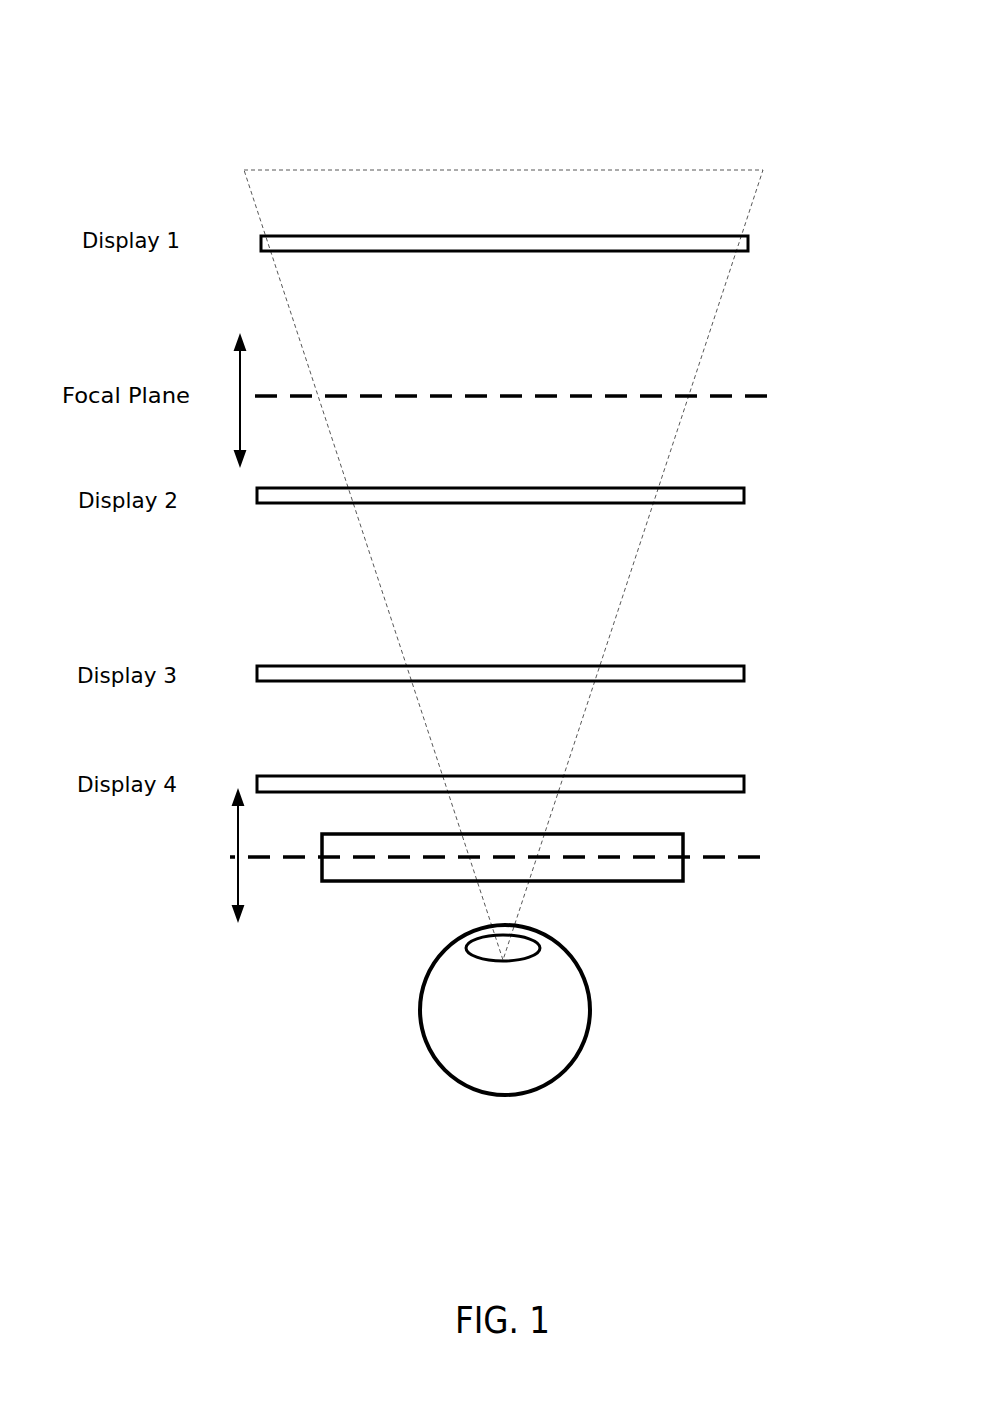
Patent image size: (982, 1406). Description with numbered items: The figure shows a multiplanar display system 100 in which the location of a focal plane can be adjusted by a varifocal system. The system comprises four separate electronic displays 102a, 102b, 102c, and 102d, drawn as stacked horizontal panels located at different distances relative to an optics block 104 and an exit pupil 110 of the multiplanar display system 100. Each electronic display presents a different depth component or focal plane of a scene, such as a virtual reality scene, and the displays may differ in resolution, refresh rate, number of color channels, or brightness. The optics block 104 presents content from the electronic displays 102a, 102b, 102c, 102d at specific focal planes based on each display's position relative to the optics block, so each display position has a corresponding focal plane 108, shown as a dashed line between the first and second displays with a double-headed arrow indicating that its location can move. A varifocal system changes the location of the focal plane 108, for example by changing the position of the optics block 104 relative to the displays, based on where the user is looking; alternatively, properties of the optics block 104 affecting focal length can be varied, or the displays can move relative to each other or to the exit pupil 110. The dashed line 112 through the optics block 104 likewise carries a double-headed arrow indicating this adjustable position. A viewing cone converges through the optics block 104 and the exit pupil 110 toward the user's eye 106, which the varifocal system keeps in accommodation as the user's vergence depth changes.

The multiplanar display system 100 is at (81, 62).
The electronic display 102a is at (748, 244).
The electronic display 102b is at (745, 494).
The electronic display 102c is at (745, 672).
The electronic display 102d is at (745, 784).
The optics block 104 is at (633, 882).
The eye 106 is at (420, 1035).
The focal plane 108 is at (767, 396).
The exit pupil 110 is at (556, 909).
The lens plane 112 is at (760, 857).